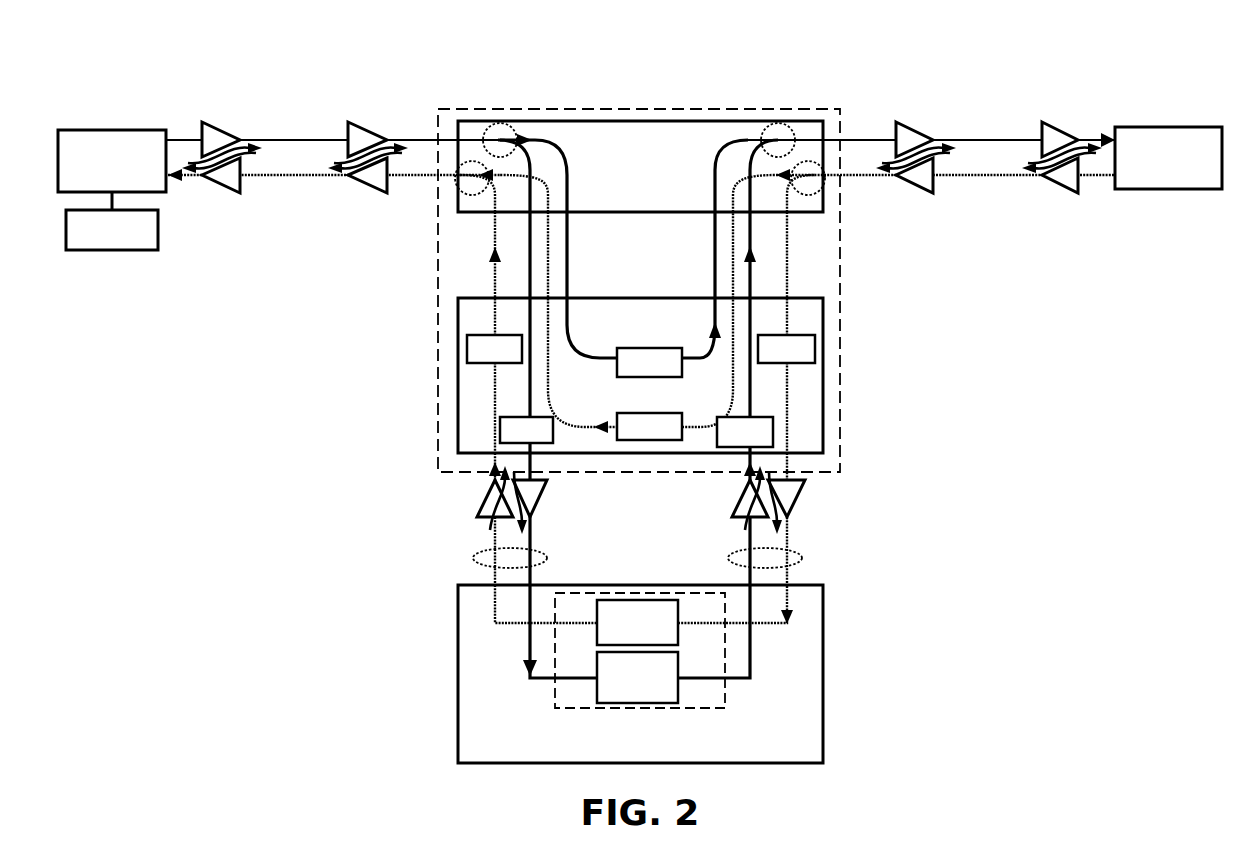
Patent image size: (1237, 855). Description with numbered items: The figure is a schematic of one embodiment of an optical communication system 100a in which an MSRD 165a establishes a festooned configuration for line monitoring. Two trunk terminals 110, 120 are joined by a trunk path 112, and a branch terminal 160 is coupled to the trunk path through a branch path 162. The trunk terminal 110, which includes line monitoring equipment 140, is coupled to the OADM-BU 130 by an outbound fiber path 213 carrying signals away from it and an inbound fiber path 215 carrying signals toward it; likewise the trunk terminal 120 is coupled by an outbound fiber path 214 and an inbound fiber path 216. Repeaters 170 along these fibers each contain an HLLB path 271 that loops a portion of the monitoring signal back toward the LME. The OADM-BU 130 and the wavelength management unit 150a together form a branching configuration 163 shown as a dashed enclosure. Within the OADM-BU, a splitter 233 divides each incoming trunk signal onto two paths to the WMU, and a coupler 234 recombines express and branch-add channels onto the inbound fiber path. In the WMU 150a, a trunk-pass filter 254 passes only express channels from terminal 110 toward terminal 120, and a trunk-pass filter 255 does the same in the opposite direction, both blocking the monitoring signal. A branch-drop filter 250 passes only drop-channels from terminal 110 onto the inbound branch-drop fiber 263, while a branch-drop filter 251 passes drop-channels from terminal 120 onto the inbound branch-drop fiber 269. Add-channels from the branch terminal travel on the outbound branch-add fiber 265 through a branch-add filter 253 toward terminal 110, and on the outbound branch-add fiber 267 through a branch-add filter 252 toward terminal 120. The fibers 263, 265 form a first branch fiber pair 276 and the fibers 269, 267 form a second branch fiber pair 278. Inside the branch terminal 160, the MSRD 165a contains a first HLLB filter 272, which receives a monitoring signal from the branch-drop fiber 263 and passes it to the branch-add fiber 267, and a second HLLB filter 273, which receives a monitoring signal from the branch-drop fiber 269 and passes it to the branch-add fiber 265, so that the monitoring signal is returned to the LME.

The optical communication system 100a is at (168, 62).
The trunk terminal 110 is at (110, 130).
The trunk terminal 120 is at (1170, 127).
The trunk path 112 is at (618, 74).
The OADM-BU 130 is at (580, 121).
The line monitoring equipment 140 is at (113, 250).
The wavelength management unit 150a is at (458, 330).
The branch terminal 160 is at (823, 690).
The branch path 162 is at (378, 529).
The branching configuration 163 is at (840, 396).
The MSRD 165a is at (725, 691).
The repeater 170 is at (342, 114).
The outbound fiber path 213 is at (290, 140).
The outbound fiber path 214 is at (975, 175).
The inbound fiber path 215 is at (290, 175).
The inbound fiber path 216 is at (985, 140).
The splitter 233 is at (489, 126).
The coupler 234 is at (776, 124).
The branch-drop filter 250 is at (500, 429).
The branch-drop filter 251 is at (815, 346).
The branch-add filter 252 is at (773, 432).
The branch-add filter 253 is at (467, 350).
The trunk-pass filter 254 is at (672, 348).
The trunk-pass filter 255 is at (650, 441).
The inbound branch-drop fiber 263 is at (530, 534).
The outbound branch-add fiber 265 is at (495, 534).
The outbound branch-add fiber 267 is at (750, 539).
The inbound branch-drop fiber 269 is at (787, 536).
The HLLB path 271 is at (397, 142).
The first HLLB filter 272 is at (597, 691).
The second HLLB filter 273 is at (640, 600).
The first branch fiber pair 276 is at (480, 566).
The second branch fiber pair 278 is at (800, 566).